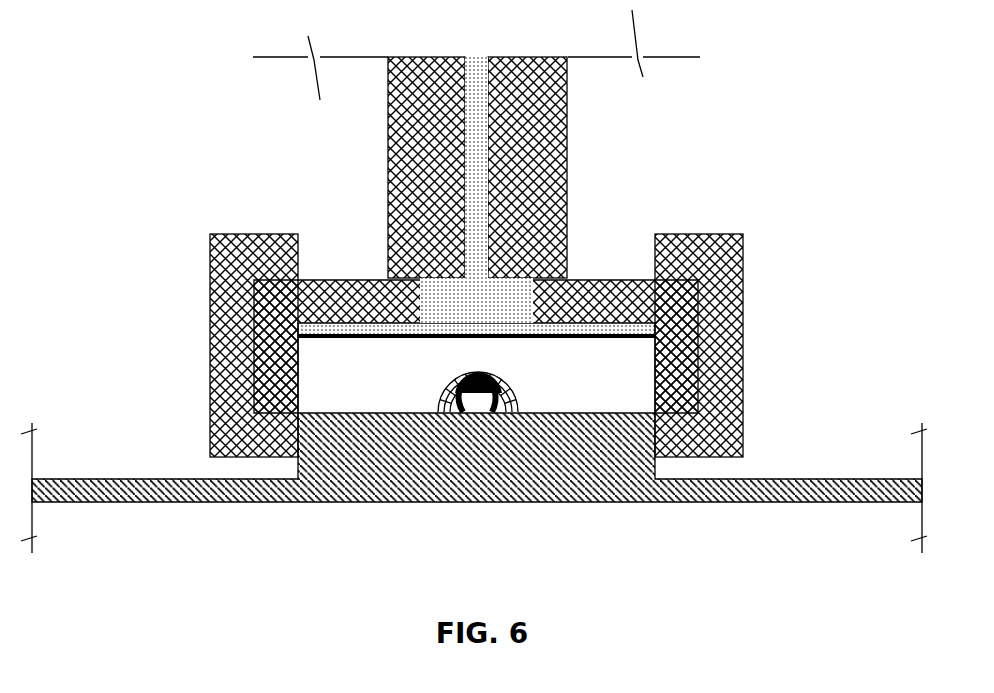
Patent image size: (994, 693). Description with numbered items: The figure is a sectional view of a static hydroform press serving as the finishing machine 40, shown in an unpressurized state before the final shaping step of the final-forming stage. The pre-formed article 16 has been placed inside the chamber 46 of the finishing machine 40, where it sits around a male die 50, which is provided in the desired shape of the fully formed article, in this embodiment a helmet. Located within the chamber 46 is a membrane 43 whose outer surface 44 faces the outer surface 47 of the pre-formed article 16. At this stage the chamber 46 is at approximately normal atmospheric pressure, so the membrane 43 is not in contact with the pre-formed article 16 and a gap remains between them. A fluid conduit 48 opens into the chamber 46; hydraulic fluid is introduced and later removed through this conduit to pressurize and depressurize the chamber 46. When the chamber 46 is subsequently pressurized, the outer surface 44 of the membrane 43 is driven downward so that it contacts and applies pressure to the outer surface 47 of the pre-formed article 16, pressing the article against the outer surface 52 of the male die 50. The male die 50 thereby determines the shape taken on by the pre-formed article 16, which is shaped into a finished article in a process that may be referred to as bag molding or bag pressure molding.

The finishing machine 40 is at (616, 184).
The fluid conduit 48 is at (470, 88).
The chamber 46 is at (300, 370).
The membrane 43 is at (382, 337).
The outer surface of the membrane 44 is at (600, 349).
The outer surface of the pre-formed article 47 is at (432, 367).
The pre-formed article 16 is at (497, 363).
The outer surface of the male die 52 is at (515, 392).
The male die 50 is at (484, 392).